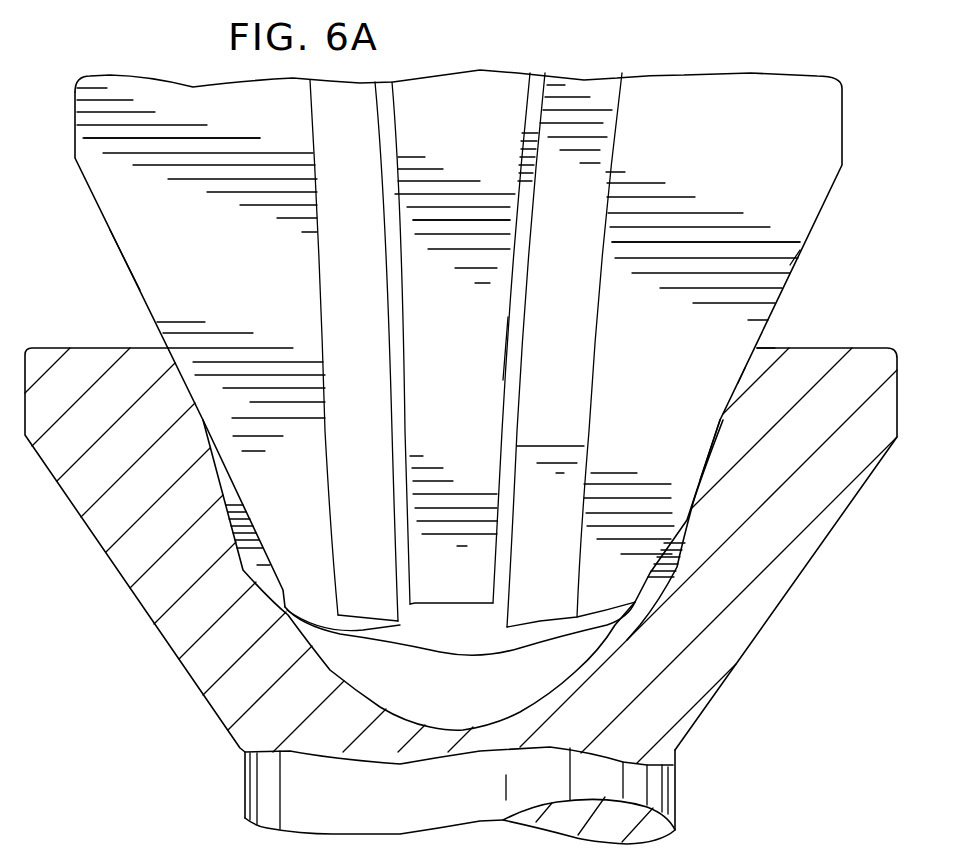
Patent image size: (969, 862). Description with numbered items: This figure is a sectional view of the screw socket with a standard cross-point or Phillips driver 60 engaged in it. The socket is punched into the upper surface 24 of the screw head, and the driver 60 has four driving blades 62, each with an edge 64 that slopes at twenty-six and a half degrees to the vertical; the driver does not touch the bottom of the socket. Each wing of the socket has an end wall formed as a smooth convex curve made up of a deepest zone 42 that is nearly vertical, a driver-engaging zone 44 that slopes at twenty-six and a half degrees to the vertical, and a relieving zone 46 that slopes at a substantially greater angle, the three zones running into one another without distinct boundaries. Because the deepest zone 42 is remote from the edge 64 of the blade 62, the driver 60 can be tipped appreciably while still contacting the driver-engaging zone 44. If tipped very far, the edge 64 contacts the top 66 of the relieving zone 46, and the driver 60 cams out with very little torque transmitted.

The cross-point driver 60 is at (847, 130).
The driving blade 62 is at (155, 220).
The edge 64 is at (137, 285).
The upper surface 24 is at (80, 345).
The top of the relieving zone 66 is at (762, 356).
The relieving zone 46 is at (738, 372).
The driver-engaging zone 44 is at (720, 432).
The deepest zone 42 is at (678, 538).